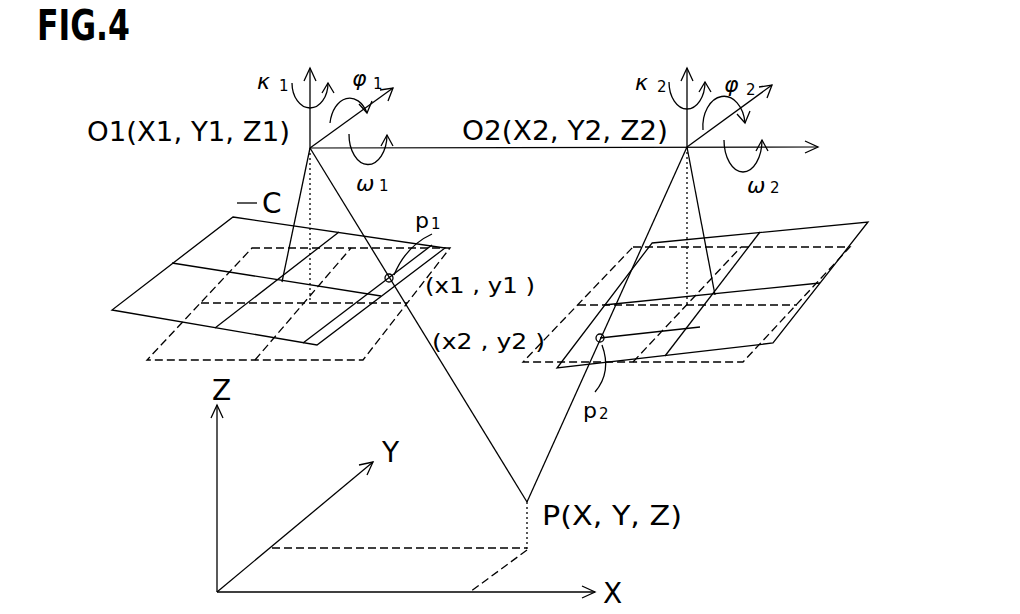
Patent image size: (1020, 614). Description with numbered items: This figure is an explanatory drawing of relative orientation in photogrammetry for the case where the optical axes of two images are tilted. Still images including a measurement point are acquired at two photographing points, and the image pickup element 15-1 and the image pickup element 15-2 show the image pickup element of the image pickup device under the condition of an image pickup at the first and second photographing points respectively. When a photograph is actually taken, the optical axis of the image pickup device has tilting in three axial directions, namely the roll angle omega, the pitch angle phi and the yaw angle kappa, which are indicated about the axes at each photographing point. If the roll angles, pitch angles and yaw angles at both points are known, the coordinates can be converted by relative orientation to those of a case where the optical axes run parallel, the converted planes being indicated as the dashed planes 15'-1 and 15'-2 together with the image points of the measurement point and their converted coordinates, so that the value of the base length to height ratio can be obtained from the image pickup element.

The image pickup element 15-1 is at (190, 251).
The image pickup element 15-2 is at (788, 226).
The first virtual (projected) image plane 15'-1 is at (273, 338).
The second virtual (projected) image plane 15'-2 is at (686, 336).